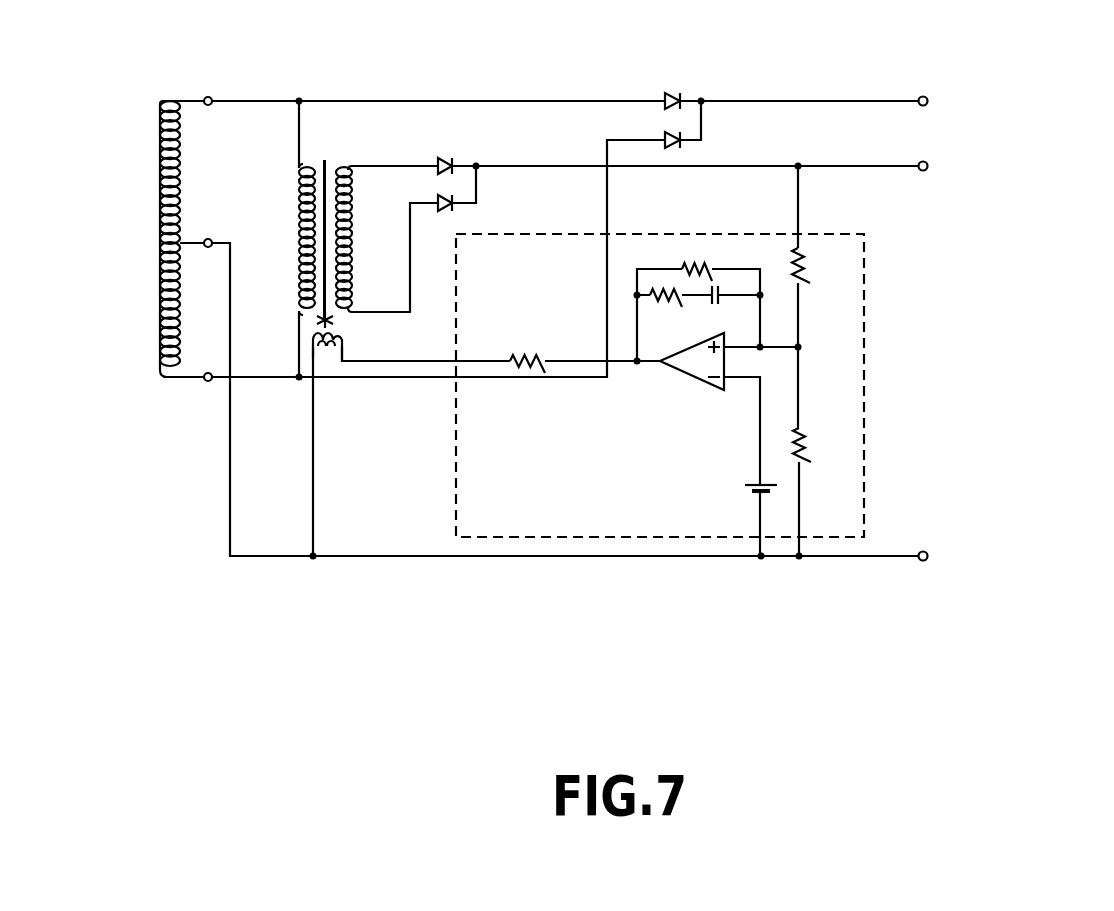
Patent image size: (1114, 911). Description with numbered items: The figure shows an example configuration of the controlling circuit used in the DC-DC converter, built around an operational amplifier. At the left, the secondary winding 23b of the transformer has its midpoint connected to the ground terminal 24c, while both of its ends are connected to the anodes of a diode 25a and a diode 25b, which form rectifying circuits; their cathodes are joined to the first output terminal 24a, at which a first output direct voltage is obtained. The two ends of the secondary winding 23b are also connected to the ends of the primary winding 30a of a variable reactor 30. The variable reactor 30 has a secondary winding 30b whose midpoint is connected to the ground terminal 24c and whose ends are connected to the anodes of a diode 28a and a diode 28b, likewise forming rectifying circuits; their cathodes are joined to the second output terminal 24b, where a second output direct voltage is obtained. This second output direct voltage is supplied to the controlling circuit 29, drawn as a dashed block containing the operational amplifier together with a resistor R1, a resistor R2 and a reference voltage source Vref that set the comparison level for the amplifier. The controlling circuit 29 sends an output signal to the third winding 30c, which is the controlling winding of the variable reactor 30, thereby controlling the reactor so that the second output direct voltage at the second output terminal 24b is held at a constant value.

The secondary winding 23b is at (183, 93).
The variable reactor 30 is at (376, 188).
The primary winding 30a is at (302, 164).
The secondary winding 30b is at (347, 168).
The third winding 30c is at (349, 354).
The diode 28a is at (455, 162).
The diode 28b is at (455, 206).
The diode 25a is at (680, 97).
The diode 25b is at (680, 144).
The first output terminal 24a is at (959, 102).
The second output terminal 24b is at (960, 167).
The ground terminal 24c is at (1006, 558).
The controlling circuit 29 is at (691, 385).
The resistor R1 is at (822, 266).
The resistor R2 is at (823, 446).
The reference voltage source Vref is at (727, 486).